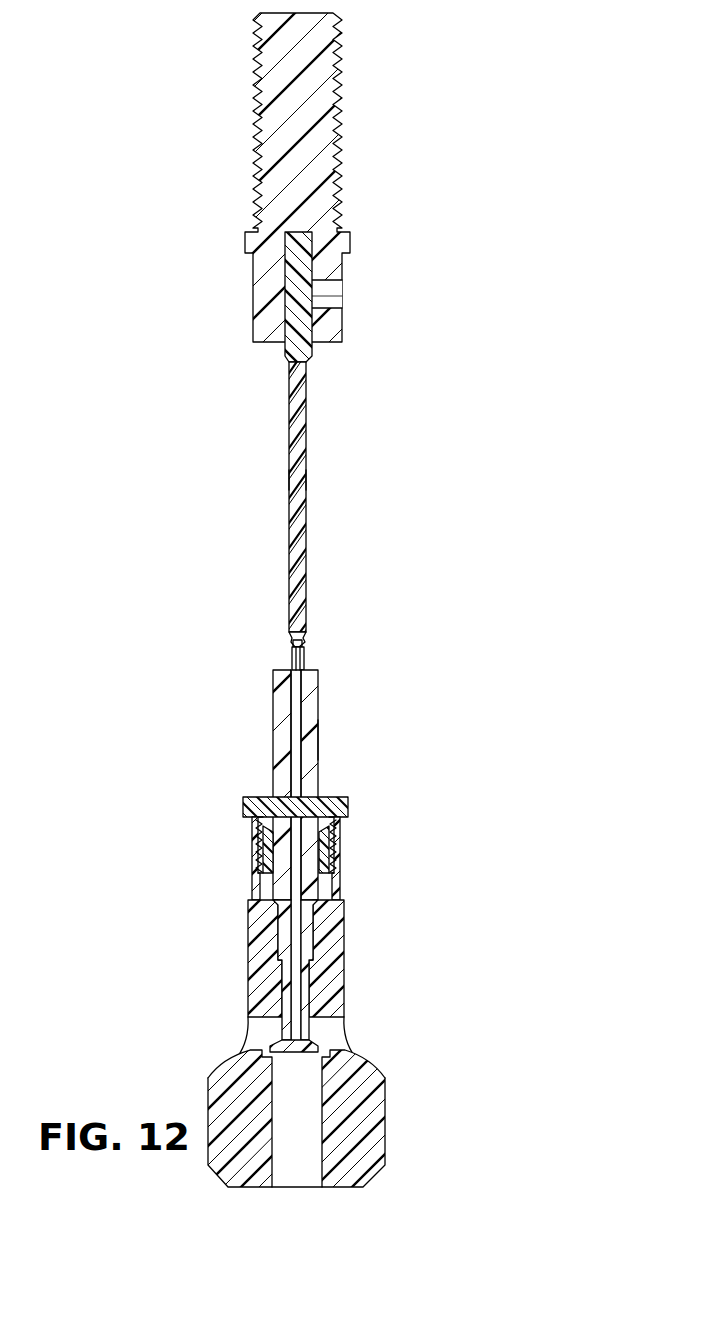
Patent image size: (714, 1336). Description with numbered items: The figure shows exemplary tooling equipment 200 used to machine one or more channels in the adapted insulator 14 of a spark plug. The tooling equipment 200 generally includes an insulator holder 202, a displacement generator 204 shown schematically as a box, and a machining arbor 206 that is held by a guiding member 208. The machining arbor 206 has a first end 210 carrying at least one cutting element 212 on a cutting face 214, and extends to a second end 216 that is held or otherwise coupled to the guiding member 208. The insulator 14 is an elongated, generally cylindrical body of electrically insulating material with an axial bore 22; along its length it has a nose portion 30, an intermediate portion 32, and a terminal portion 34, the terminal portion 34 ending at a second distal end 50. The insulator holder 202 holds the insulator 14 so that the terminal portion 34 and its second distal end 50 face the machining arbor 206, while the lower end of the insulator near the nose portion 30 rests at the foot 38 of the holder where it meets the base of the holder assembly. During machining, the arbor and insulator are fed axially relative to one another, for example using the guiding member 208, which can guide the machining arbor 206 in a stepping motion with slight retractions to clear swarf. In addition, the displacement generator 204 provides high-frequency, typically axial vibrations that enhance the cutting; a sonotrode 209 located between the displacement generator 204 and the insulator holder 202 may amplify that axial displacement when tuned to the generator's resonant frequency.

The tooling equipment 200 is at (408, 633).
The guiding member 208 is at (320, 68).
The second end 216 is at (297, 293).
The machining arbor 206 is at (306, 465).
The cutting face 214 is at (290, 478).
The first end 210 is at (278, 630).
The cutting element 212 is at (305, 642).
The second distal end 50 is at (305, 670).
The adapted insulator 14 is at (320, 712).
The axial bore 22 is at (295, 715).
The terminal portion 34 is at (321, 741).
The intermediate portion 32 is at (320, 907).
The nose portion 30 is at (310, 1006).
The tube foot 38 is at (282, 1046).
The insulator holder 202 is at (357, 1055).
The sonotrode 209 is at (325, 1112).
The displacement generator 204 is at (296, 1190).